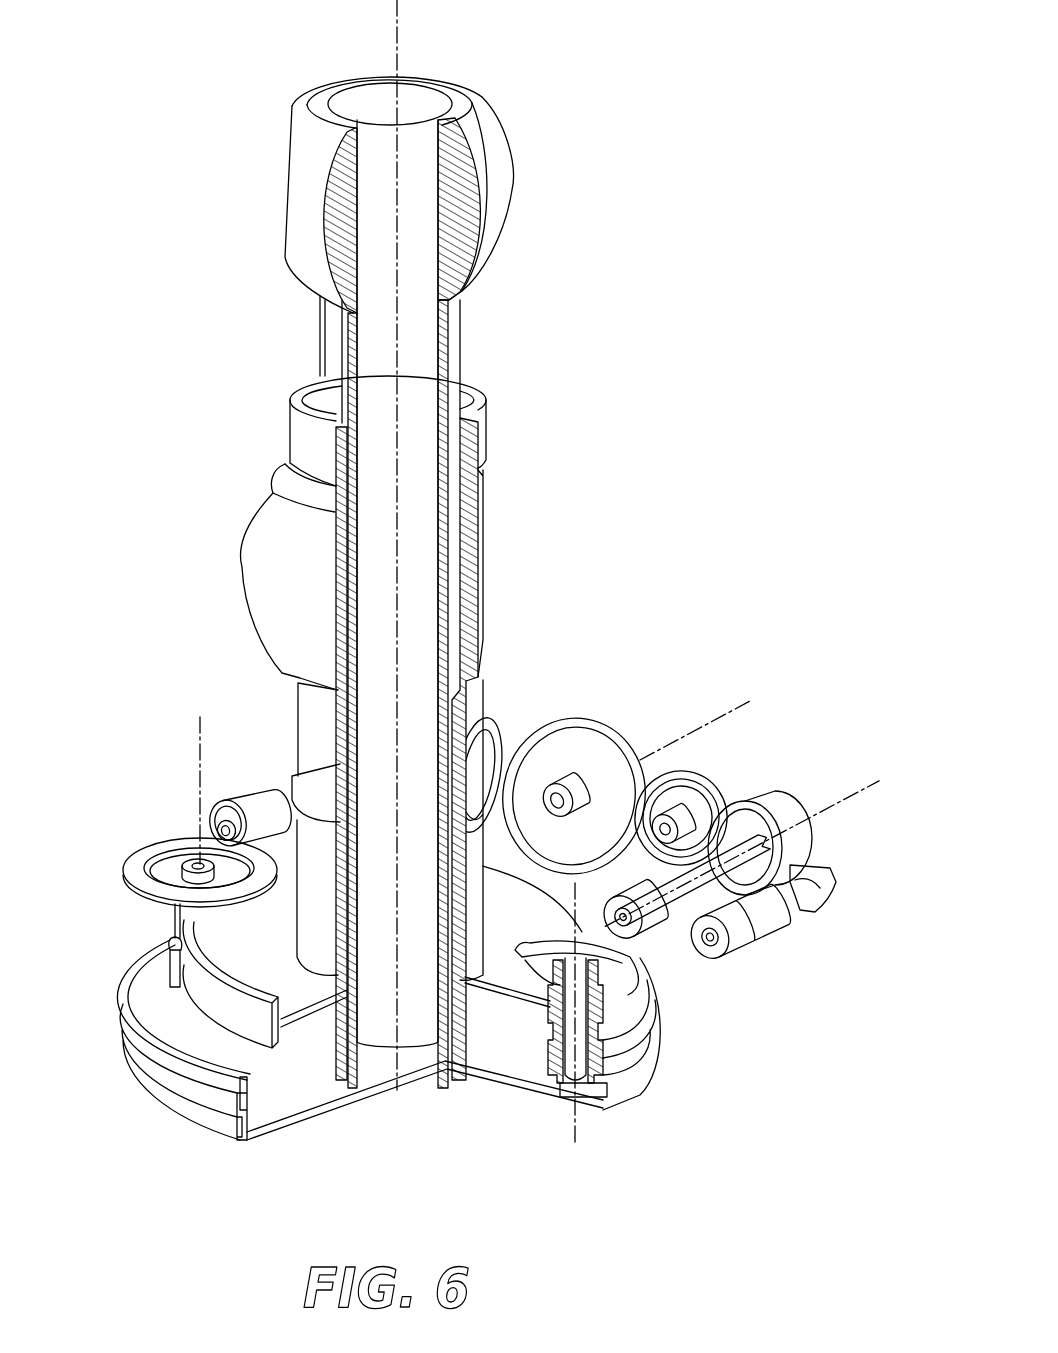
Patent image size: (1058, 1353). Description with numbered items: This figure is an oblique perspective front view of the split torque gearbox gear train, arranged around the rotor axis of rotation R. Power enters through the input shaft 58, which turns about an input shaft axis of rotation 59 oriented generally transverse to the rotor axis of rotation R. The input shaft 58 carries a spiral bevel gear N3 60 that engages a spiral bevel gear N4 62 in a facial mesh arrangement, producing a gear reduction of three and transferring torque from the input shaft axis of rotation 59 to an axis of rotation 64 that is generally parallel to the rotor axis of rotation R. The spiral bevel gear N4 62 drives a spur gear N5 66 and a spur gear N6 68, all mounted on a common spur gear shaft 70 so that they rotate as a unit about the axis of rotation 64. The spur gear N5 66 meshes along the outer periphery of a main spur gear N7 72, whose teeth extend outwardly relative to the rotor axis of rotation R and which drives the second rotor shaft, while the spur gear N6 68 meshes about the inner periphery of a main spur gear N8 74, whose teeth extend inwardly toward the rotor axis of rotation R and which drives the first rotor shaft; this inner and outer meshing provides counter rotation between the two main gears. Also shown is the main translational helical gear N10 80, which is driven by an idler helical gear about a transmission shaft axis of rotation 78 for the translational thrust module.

The rotor axis of rotation R is at (398, 33).
The input shaft 58 is at (672, 897).
The input shaft axis of rotation 59 is at (833, 810).
The spiral bevel gear N3 60 is at (243, 810).
The spiral bevel gear N4 62 is at (150, 847).
The axis of rotation 64 is at (198, 787).
The spur gear N5 66 is at (177, 912).
The spur gear N6 68 is at (137, 998).
The spur gear shaft 70 is at (170, 948).
The main spur gear N7 72 is at (238, 1015).
The main spur gear N8 74 is at (193, 1120).
The transmission shaft axis of rotation 78 is at (707, 725).
The main translational helical gear N10 80 is at (560, 748).